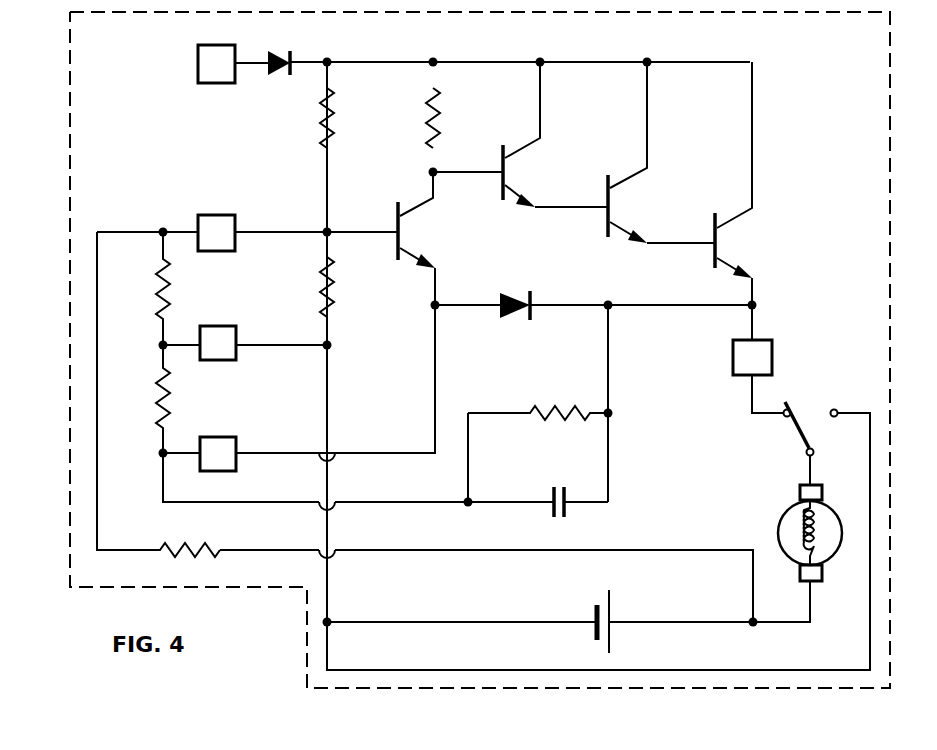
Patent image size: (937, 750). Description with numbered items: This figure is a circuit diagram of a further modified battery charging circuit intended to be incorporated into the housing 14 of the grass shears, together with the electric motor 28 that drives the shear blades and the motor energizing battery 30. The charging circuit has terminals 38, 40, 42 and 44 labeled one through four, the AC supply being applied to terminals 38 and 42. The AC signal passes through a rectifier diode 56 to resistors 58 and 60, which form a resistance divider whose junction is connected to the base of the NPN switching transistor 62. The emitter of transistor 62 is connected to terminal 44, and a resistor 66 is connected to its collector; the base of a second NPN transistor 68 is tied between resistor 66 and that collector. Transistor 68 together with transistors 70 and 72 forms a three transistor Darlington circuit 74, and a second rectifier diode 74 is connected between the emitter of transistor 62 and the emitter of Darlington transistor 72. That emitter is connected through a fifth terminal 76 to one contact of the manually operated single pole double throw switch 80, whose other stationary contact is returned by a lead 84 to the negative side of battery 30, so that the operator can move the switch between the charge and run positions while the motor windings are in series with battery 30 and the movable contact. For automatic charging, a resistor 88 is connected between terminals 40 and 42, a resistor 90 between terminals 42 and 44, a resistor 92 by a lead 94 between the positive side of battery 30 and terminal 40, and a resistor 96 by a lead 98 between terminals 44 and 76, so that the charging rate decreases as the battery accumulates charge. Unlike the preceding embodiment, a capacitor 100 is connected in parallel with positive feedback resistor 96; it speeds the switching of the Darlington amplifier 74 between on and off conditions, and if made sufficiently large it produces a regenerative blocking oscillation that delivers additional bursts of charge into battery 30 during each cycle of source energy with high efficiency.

The housing 14 is at (70, 112).
The electric motor 28 is at (778, 533).
The battery 30 is at (592, 612).
The terminal 38 is at (198, 63).
The terminal 40 is at (208, 215).
The terminal 42 is at (225, 326).
The terminal 44 is at (226, 437).
The rectifier diode 56 is at (279, 80).
The resistor 58 is at (318, 115).
The resistor 60 is at (318, 293).
The NPN junction transistor 62 is at (392, 226).
The resistor 66 is at (426, 114).
The NPN junction transistor 68 is at (498, 182).
The transistor 70 is at (602, 216).
The transistor 72 is at (708, 252).
The Darlington circuit 74 is at (758, 137).
The fifth terminal 76 is at (733, 353).
The single pole double throw switch 80 is at (812, 400).
The lead 84 is at (506, 669).
The resistor 88 is at (156, 290).
The resistor 90 is at (156, 403).
The resistor 92 is at (200, 556).
The lead 94 is at (466, 552).
The resistor 96 is at (550, 430).
The lead 98 is at (414, 500).
The capacitor 100 is at (548, 510).